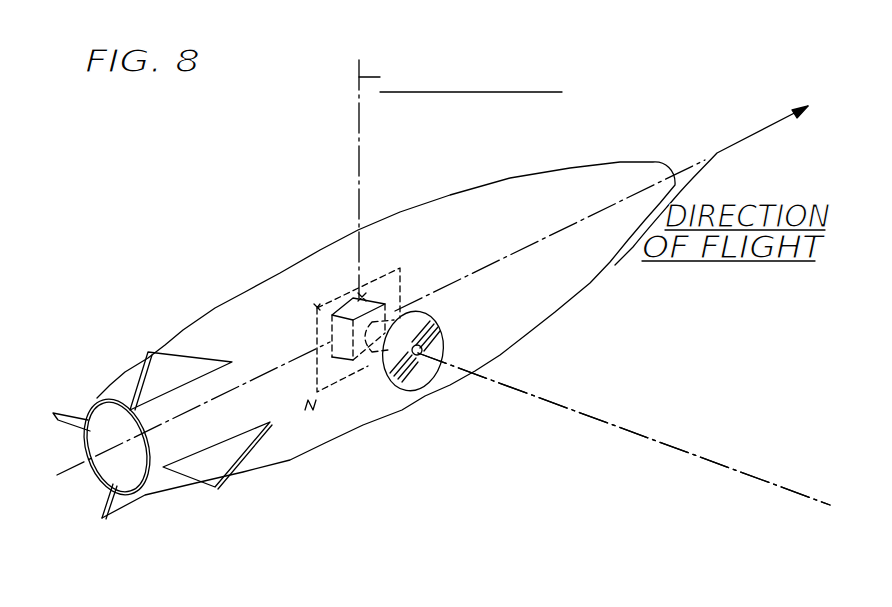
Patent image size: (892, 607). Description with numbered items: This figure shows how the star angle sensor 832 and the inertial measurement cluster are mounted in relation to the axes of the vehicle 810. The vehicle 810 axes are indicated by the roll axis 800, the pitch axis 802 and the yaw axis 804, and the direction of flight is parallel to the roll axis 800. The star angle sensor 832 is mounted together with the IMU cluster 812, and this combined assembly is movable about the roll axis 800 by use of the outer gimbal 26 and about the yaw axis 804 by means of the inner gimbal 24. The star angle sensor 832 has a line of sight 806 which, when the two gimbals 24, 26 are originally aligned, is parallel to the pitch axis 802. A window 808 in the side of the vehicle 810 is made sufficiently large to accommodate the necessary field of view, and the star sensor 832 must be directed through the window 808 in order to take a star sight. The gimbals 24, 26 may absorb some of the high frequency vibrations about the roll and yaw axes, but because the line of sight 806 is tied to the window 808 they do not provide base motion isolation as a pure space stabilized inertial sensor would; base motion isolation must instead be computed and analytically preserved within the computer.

The roll axis 800 is at (725, 130).
The pitch axis 802 is at (787, 411).
The yaw axis 804 is at (358, 128).
The line of sight 806 is at (820, 546).
The window 808 is at (770, 313).
The vehicle 810 is at (215, 308).
The IMU cluster 812 is at (325, 212).
The inner gimbal 24 is at (555, 502).
The outer gimbal 26 is at (613, 168).
The star angle sensor 832 is at (575, 440).